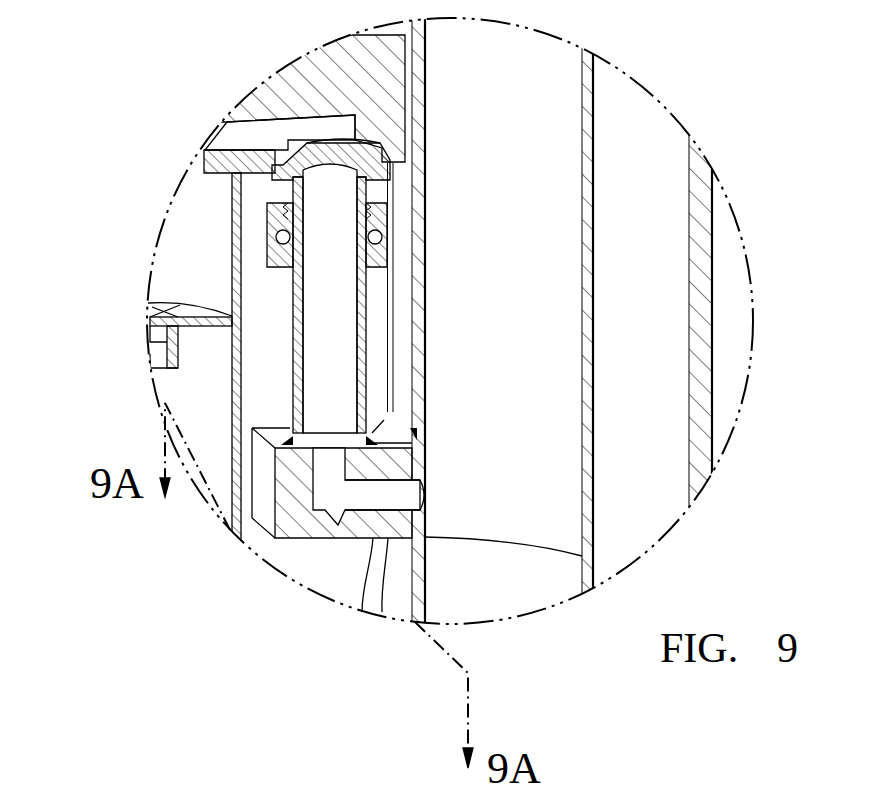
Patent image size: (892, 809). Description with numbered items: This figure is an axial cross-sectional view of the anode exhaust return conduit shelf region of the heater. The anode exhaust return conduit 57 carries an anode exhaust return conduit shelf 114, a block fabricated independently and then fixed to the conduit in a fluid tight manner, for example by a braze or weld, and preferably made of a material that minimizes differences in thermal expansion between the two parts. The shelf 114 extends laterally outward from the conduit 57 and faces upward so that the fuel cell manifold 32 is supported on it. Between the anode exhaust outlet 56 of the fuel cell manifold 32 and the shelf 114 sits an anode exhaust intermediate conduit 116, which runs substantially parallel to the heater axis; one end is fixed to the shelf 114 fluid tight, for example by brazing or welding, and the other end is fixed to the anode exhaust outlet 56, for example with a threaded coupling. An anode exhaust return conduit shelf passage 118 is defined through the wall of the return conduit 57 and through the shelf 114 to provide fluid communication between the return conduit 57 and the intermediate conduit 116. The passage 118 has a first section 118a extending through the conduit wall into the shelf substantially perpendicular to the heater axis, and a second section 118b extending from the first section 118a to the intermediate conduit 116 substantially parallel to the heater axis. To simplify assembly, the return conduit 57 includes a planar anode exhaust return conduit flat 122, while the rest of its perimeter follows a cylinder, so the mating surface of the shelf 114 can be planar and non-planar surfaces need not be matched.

The fuel cell manifold 32 is at (283, 62).
The anode exhaust outlet 56 is at (328, 152).
The anode exhaust return conduit 57 is at (593, 125).
The anode exhaust return conduit shelf 114 is at (384, 420).
The anode exhaust intermediate conduit 116 is at (297, 303).
The anode exhaust return conduit shelf passage 118 is at (222, 503).
The anode exhaust return conduit shelf passage first section 118a is at (363, 497).
The anode exhaust return conduit shelf passage second section 118b is at (328, 450).
The anode exhaust return conduit flat 122 is at (415, 232).